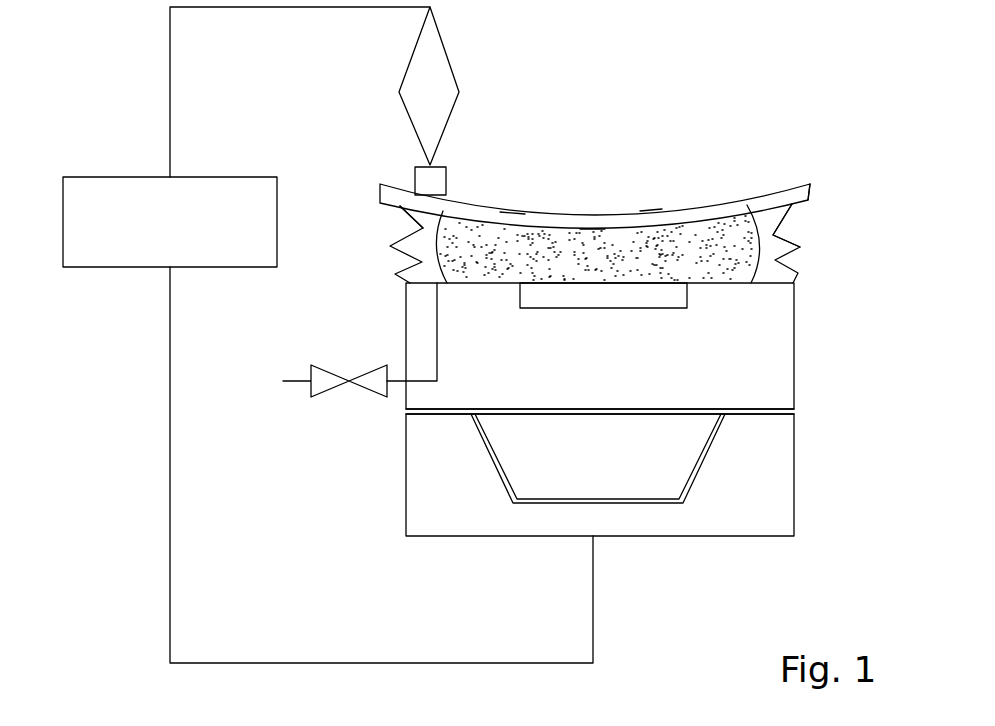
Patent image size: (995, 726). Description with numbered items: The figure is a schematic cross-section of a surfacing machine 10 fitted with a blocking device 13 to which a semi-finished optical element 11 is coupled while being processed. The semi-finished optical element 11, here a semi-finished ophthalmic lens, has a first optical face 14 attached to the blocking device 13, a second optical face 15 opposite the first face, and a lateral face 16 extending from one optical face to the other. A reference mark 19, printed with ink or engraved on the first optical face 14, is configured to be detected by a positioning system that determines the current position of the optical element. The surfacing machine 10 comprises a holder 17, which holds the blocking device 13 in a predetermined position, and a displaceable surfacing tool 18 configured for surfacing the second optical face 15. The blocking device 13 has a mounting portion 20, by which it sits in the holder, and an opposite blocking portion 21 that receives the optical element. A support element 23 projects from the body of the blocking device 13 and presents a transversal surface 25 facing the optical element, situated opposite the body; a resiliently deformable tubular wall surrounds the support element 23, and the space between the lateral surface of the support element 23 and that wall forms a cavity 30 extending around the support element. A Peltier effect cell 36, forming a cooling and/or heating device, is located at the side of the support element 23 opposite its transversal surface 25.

The surfacing machine 10 is at (122, 268).
The semi-finished optical element 11 is at (760, 193).
The blocking device 13 is at (796, 325).
The first optical face 14 is at (706, 226).
The second optical face 15 is at (650, 211).
The lateral face 16 is at (812, 187).
The holder 17 is at (796, 490).
The surfacing tool 18 is at (444, 50).
The reference mark 19 is at (593, 229).
The mounting portion 20 is at (806, 412).
The blocking portion 21 is at (850, 272).
The support element 23 is at (409, 218).
The transversal surface 25 is at (512, 214).
The cavity 30 is at (409, 262).
The Peltier effect cell 36 is at (600, 309).